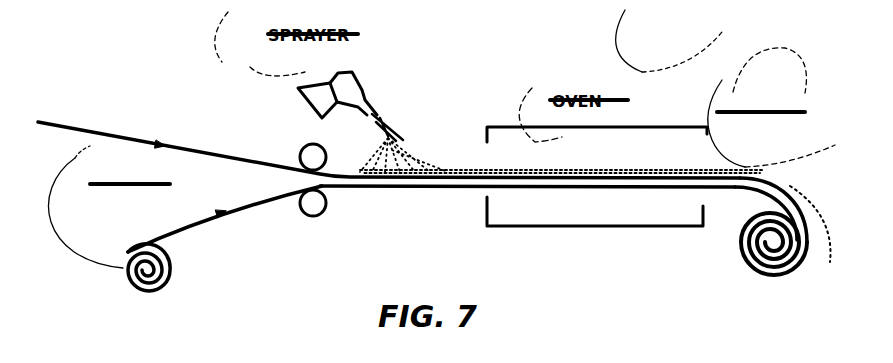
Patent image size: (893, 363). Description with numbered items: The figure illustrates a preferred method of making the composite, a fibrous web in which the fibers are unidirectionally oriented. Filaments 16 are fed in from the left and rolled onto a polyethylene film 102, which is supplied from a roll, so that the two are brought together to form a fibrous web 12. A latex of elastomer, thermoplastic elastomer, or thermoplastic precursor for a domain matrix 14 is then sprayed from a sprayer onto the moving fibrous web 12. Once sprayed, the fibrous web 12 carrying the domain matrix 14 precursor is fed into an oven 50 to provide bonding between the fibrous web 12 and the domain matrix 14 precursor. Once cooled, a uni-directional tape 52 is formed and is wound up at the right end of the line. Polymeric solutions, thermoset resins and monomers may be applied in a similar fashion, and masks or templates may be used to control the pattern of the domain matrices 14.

The fibrous web 12 is at (382, 194).
The domain matrix 14 is at (424, 112).
The filaments 16 is at (221, 154).
The oven 50 is at (633, 127).
The uni-directional tape 52 is at (770, 160).
The polyethylene film 102 is at (183, 212).